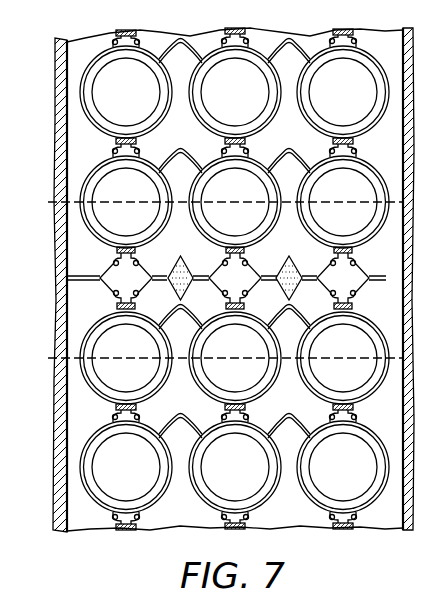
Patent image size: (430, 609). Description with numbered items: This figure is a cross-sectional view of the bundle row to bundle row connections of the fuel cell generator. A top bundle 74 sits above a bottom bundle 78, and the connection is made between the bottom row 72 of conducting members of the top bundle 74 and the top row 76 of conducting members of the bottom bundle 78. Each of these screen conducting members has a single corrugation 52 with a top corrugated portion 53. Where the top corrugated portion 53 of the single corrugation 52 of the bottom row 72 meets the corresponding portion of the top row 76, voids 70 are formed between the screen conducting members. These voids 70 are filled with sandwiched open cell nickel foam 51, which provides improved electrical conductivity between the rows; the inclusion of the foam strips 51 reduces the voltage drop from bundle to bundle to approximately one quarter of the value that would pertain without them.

The top bundle 74 is at (396, 51).
The bottom bundle 78 is at (93, 527).
The bottom row 72 is at (212, 203).
The top row 76 is at (212, 359).
The voids 70 is at (300, 268).
The open cell nickel foam 51 is at (300, 292).
The single corrugation 52 is at (160, 278).
The top corrugated portion 53 is at (192, 250).